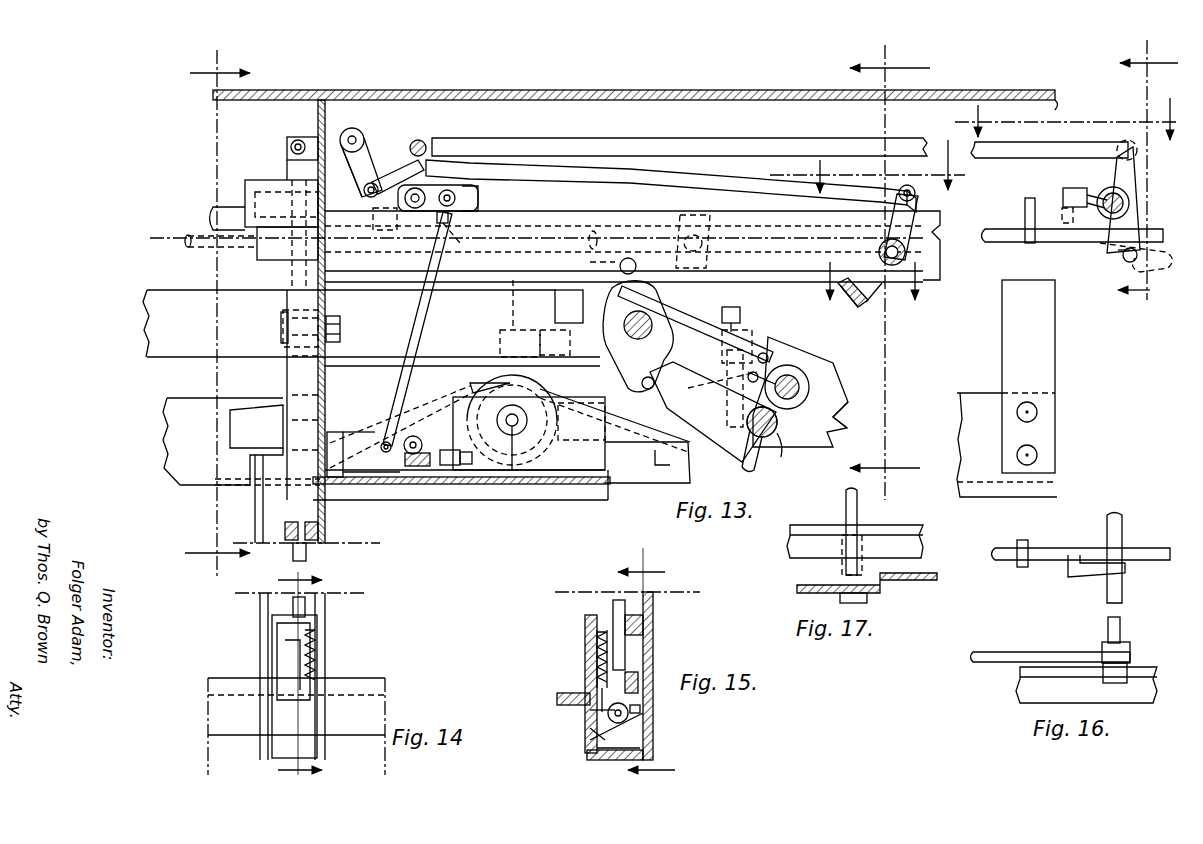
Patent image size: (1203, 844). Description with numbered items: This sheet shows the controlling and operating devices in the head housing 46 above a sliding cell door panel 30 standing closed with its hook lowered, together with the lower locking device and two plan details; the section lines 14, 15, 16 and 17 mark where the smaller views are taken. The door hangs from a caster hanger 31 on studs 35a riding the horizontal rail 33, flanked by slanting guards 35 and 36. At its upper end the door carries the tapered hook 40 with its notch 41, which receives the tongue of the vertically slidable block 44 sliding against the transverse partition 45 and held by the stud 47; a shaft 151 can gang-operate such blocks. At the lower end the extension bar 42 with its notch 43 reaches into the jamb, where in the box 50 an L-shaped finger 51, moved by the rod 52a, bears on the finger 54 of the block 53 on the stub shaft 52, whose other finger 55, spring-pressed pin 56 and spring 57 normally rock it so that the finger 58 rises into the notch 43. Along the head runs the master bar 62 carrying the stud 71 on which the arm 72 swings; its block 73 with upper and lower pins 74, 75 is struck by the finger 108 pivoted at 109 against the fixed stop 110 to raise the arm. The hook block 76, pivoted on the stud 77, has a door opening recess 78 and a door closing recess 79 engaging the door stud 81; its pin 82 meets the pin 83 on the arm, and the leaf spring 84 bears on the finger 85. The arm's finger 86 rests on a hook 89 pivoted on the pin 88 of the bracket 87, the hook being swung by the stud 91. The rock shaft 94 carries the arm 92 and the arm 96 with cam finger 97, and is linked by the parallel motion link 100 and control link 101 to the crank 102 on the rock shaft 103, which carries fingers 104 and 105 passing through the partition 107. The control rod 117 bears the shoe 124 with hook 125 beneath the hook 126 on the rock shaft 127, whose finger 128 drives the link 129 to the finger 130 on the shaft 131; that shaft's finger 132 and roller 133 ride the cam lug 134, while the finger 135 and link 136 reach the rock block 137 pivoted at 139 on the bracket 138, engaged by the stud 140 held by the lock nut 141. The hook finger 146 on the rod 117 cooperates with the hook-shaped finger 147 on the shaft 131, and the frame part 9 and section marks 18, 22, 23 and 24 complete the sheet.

In FIG. 13, the frame end 9 is at (933, 241).
In FIG. 15, the section line 14— 14 is at (659, 663).
In FIG. 14, the section line 15— 15 is at (312, 676).
In FIG. 13, the section line 16— 16 is at (1065, 116).
In FIG. 13, the section line 17— 17 is at (870, 170).
In FIG. 13, the section line 18 is at (890, 271).
In FIG. 13, the section line 22 is at (217, 318).
In FIG. 13, the section line 23 is at (1148, 179).
In FIG. 13, the section line 24 is at (869, 285).
In FIG. 13, the door panel 30 is at (596, 498).
In FIG. 13, the caster hanger 31 is at (552, 484).
In FIG. 13, the horizontal rod or rail 33 is at (646, 460).
In FIG. 13, the slanting guard 35 is at (476, 382).
In FIG. 13, the stud 35a is at (512, 472).
In FIG. 13, the slanting guard 36 is at (556, 390).
In FIG. 13, the tapered hook or tongue 40 is at (224, 406).
In FIG. 13, the notch 41 is at (274, 404).
In FIG. 14, the horizontal extension bar 42 is at (368, 716).
In FIG. 15, the horizontal extension bar 42 is at (560, 694).
In FIG. 15, the notch 43 is at (590, 730).
In FIG. 13, the vertically slidable block 44 is at (296, 360).
In FIG. 13, the transverse partition 45 is at (328, 306).
In FIG. 13, the head housing 46 is at (518, 110).
In FIG. 13, the stud 47 is at (284, 318).
In FIG. 14, the housing or box 50 is at (320, 645).
In FIG. 15, the housing or box 50 is at (655, 632).
In FIG. 14, the L-shaped finger 51 is at (300, 678).
In FIG. 15, the L-shaped finger 51 is at (640, 676).
In FIG. 15, the stub shaft 52 is at (630, 708).
In FIG. 13, the rod 52a is at (308, 552).
In FIG. 14, the rod 52a is at (306, 612).
In FIG. 15, the rod 52a is at (618, 612).
In FIG. 15, the block 53 is at (643, 728).
In FIG. 15, the finger 54 is at (640, 714).
In FIG. 15, the finger 55 is at (588, 712).
In FIG. 15, the pin 56 is at (582, 678).
In FIG. 14, the spring 57 is at (316, 668).
In FIG. 15, the spring 57 is at (584, 648).
In FIG. 15, the finger 58 is at (597, 748).
In FIG. 13, the master or operating bar 62 is at (150, 348).
In FIG. 13, the stud 71 is at (626, 310).
In FIG. 13, the arm 72 is at (713, 409).
In FIG. 13, the block 73 is at (636, 380).
In FIG. 13, the upper pin 74 is at (589, 262).
In FIG. 13, the lower pin 75 is at (642, 386).
In FIG. 13, the hook block 76 is at (832, 384).
In FIG. 13, the stud 77 is at (794, 376).
In FIG. 13, the door opening recess 78 is at (840, 425).
In FIG. 13, the door closing recess 79 is at (783, 440).
In FIG. 13, the stud 81 is at (764, 444).
In FIG. 13, the pin 82 is at (750, 380).
In FIG. 13, the pin 83 is at (719, 386).
In FIG. 13, the leaf spring 84 is at (710, 284).
In FIG. 13, the finger 85 is at (766, 352).
In FIG. 13, the finger 86 is at (738, 448).
In FIG. 13, the bracket 87 is at (498, 325).
In FIG. 13, the pin 88 is at (561, 322).
In FIG. 13, the hook 89 is at (755, 465).
In FIG. 13, the stud 91 is at (734, 354).
In FIG. 17, the arm 92 is at (842, 582).
In FIG. 13, the rock shaft 94 is at (878, 250).
In FIG. 17, the rock shaft 94 is at (848, 502).
In FIG. 13, the arm 96 is at (860, 306).
In FIG. 13, the cam finger 97 is at (838, 304).
In FIG. 13, the parallel motion link 100 is at (931, 175).
In FIG. 17, the parallel motion link 100 is at (936, 582).
In FIG. 13, the control link 101 is at (642, 175).
In FIG. 17, the control link 101 is at (802, 592).
In FIG. 13, the finger or crank 102 is at (378, 158).
In FIG. 13, the rock shaft 103 is at (352, 128).
In FIG. 13, the finger 104 is at (363, 198).
In FIG. 13, the finger 105 is at (308, 137).
In FIG. 13, the partition 107 is at (328, 258).
In FIG. 13, the finger 108 is at (658, 250).
In FIG. 13, the pivot point 109 is at (677, 220).
In FIG. 13, the fixed stop 110 is at (715, 212).
In FIG. 13, the control rod 117 is at (188, 234).
In FIG. 16, the control rod 117 is at (1050, 562).
In FIG. 13, the shoe 124 is at (440, 236).
In FIG. 13, the hook 125 is at (462, 218).
In FIG. 13, the hook 126 is at (480, 196).
In FIG. 13, the rock shaft 127 is at (398, 171).
In FIG. 13, the finger 128 is at (424, 138).
In FIG. 13, the link 129 is at (788, 146).
In FIG. 16, the link 129 is at (974, 664).
In FIG. 13, the finger 130 is at (1118, 171).
In FIG. 16, the finger 130 is at (1130, 654).
In FIG. 13, the shaft 131 is at (1130, 196).
In FIG. 16, the shaft 131 is at (1108, 610).
In FIG. 13, the finger 132 is at (1112, 250).
In FIG. 13, the roller 133 is at (1120, 260).
In FIG. 13, the lug 134 is at (1028, 376).
In FIG. 13, the finger 135 is at (442, 185).
In FIG. 13, the link 136 is at (426, 316).
In FIG. 13, the rock block 137 is at (382, 460).
In FIG. 13, the bracket 138 is at (354, 432).
In FIG. 13, the pivot point 139 is at (422, 431).
In FIG. 13, the stud 140 is at (422, 468).
In FIG. 13, the lock nut 141 is at (454, 466).
In FIG. 13, the hook finger 146 is at (1024, 218).
In FIG. 16, the hook finger 146 is at (1024, 540).
In FIG. 13, the hook-shaped finger 147 is at (1066, 190).
In FIG. 16, the hook-shaped finger 147 is at (1078, 552).
In FIG. 13, the shaft 151 is at (213, 207).